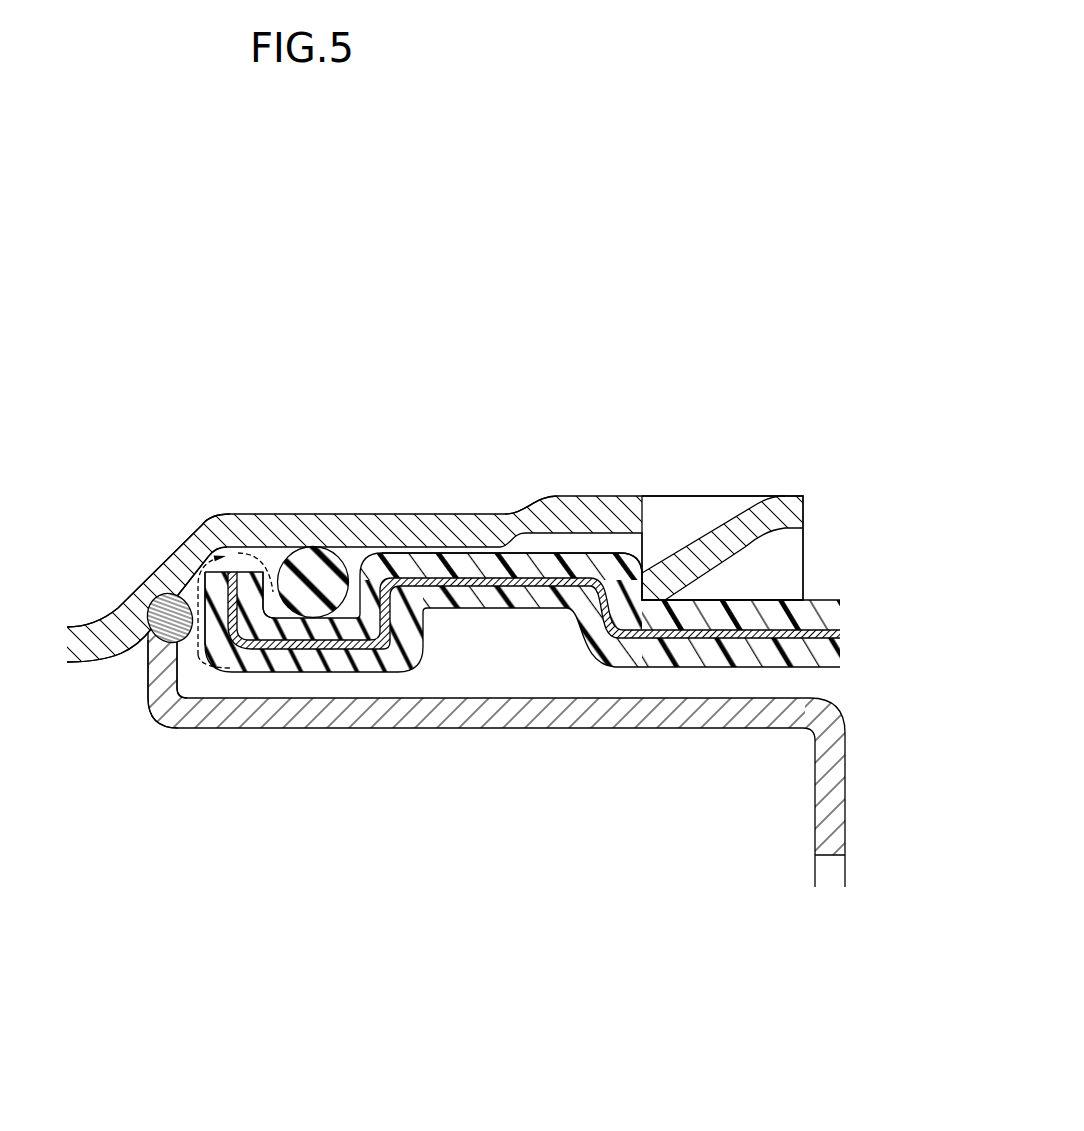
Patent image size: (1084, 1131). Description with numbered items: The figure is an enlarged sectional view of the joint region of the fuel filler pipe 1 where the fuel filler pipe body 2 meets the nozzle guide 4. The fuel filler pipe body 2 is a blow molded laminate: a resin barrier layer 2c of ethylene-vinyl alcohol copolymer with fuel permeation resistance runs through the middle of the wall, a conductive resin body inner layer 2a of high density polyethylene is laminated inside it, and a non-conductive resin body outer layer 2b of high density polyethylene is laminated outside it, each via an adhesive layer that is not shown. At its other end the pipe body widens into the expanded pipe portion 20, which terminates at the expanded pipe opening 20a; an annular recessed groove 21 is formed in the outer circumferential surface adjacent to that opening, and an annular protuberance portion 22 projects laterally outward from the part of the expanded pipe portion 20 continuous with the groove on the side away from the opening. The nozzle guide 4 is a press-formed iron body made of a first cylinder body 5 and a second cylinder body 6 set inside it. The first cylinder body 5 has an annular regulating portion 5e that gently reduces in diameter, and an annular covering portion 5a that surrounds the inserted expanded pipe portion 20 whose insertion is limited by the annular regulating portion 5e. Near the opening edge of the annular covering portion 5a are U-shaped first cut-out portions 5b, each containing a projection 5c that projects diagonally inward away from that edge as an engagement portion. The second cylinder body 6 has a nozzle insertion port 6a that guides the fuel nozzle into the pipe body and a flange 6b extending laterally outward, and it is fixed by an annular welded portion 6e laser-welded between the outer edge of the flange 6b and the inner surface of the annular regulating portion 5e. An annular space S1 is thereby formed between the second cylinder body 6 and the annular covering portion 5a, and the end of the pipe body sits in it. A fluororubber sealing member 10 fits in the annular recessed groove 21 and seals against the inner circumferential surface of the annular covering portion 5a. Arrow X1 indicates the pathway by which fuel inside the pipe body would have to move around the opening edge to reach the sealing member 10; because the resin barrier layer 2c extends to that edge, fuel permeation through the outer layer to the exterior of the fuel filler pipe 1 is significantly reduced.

The fuel filler pipe 1 is at (749, 381).
The fuel filler pipe body 2 is at (918, 579).
The resin body inner layer 2a is at (822, 656).
The resin body outer layer 2b is at (814, 617).
The resin barrier layer 2c is at (823, 635).
The nozzle guide 4 is at (217, 450).
The first cylinder body 5 is at (356, 512).
The annular covering portion 5a is at (527, 518).
The first cut-out portion 5b is at (643, 514).
The projection 5c is at (686, 545).
The annular regulating portion 5e is at (191, 533).
The second cylinder body 6 is at (848, 790).
The nozzle insertion port 6a is at (814, 873).
The flange 6b is at (147, 676).
The annular welded portion 6e is at (178, 595).
The sealing member 10 is at (277, 578).
The expanded pipe portion 20 is at (820, 600).
The expanded pipe opening 20a is at (130, 594).
The annular recessed groove 21 is at (275, 597).
The annular protuberance portion 22 is at (421, 550).
The annular space S1 is at (512, 672).
The arrow indicating pathway of fuel movement X1 is at (207, 674).